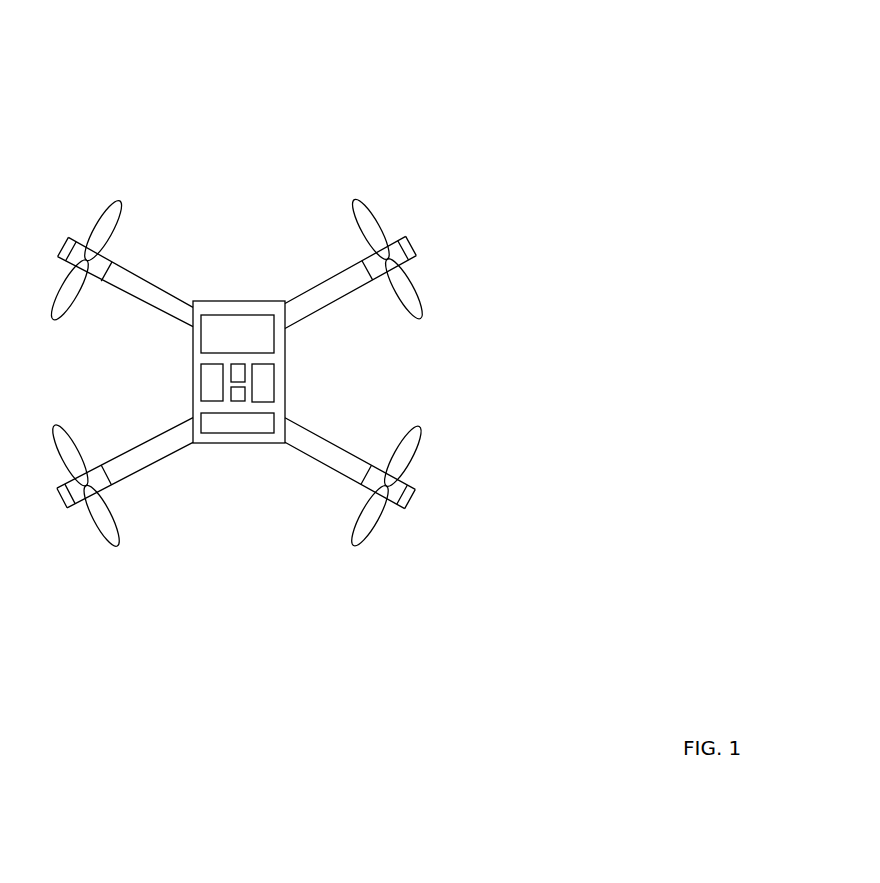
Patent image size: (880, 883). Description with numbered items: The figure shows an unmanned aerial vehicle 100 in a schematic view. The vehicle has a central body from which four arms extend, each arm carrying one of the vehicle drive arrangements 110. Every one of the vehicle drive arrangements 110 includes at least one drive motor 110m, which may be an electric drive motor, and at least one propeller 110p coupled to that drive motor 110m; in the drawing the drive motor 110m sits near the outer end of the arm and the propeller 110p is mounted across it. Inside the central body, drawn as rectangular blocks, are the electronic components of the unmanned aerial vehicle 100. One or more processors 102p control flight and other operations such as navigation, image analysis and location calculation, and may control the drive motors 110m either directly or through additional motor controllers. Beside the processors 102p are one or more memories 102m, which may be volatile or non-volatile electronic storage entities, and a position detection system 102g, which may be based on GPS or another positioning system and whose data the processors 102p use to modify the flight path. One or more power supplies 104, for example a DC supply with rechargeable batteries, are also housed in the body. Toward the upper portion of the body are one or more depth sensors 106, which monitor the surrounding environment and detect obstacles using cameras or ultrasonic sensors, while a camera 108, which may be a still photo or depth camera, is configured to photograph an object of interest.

The unmanned aerial vehicle 100 is at (358, 103).
The processors 102p is at (213, 383).
The position detection system 102g is at (237, 372).
The memories 102m is at (240, 395).
The power supplies 104 is at (262, 385).
The depth sensors 106 is at (237, 333).
The camera 108 is at (238, 423).
The vehicle drive arrangements 110 is at (130, 255).
The drive motor 110m is at (398, 250).
The propeller 110p is at (420, 306).